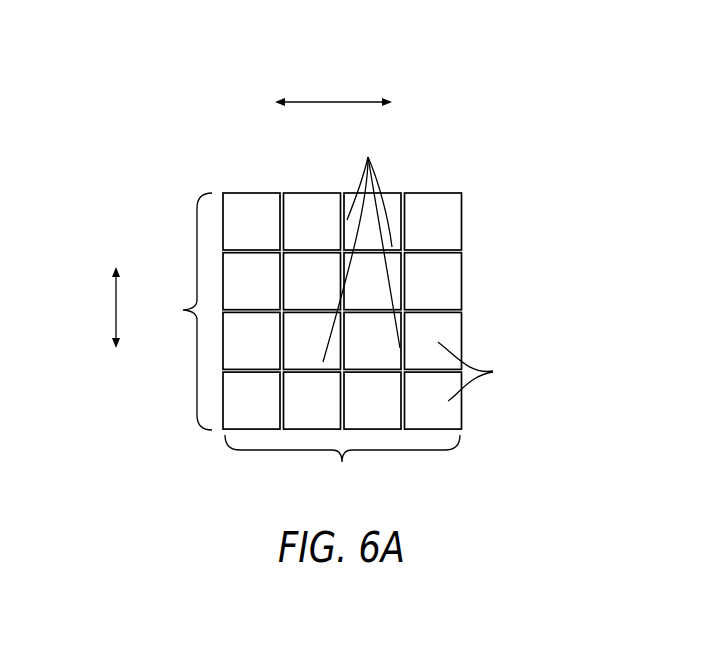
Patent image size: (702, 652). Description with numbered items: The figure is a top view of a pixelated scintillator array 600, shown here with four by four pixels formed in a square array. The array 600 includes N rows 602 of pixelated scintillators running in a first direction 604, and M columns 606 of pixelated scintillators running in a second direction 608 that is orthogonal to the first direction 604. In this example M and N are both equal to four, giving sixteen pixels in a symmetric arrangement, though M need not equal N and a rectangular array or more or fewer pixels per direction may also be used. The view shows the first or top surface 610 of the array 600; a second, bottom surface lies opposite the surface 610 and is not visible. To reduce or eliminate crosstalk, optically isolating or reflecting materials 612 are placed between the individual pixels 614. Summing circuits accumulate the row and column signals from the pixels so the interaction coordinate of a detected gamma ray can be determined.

The pixelated scintillator array 600 is at (484, 154).
The rows 602 is at (172, 295).
The first direction 604 is at (112, 308).
The columns 606 is at (352, 480).
The second direction 608 is at (300, 101).
The first or top surface 610 is at (184, 442).
The optically isolating or reflecting materials 612 is at (361, 247).
The individual pixels 614 is at (487, 371).